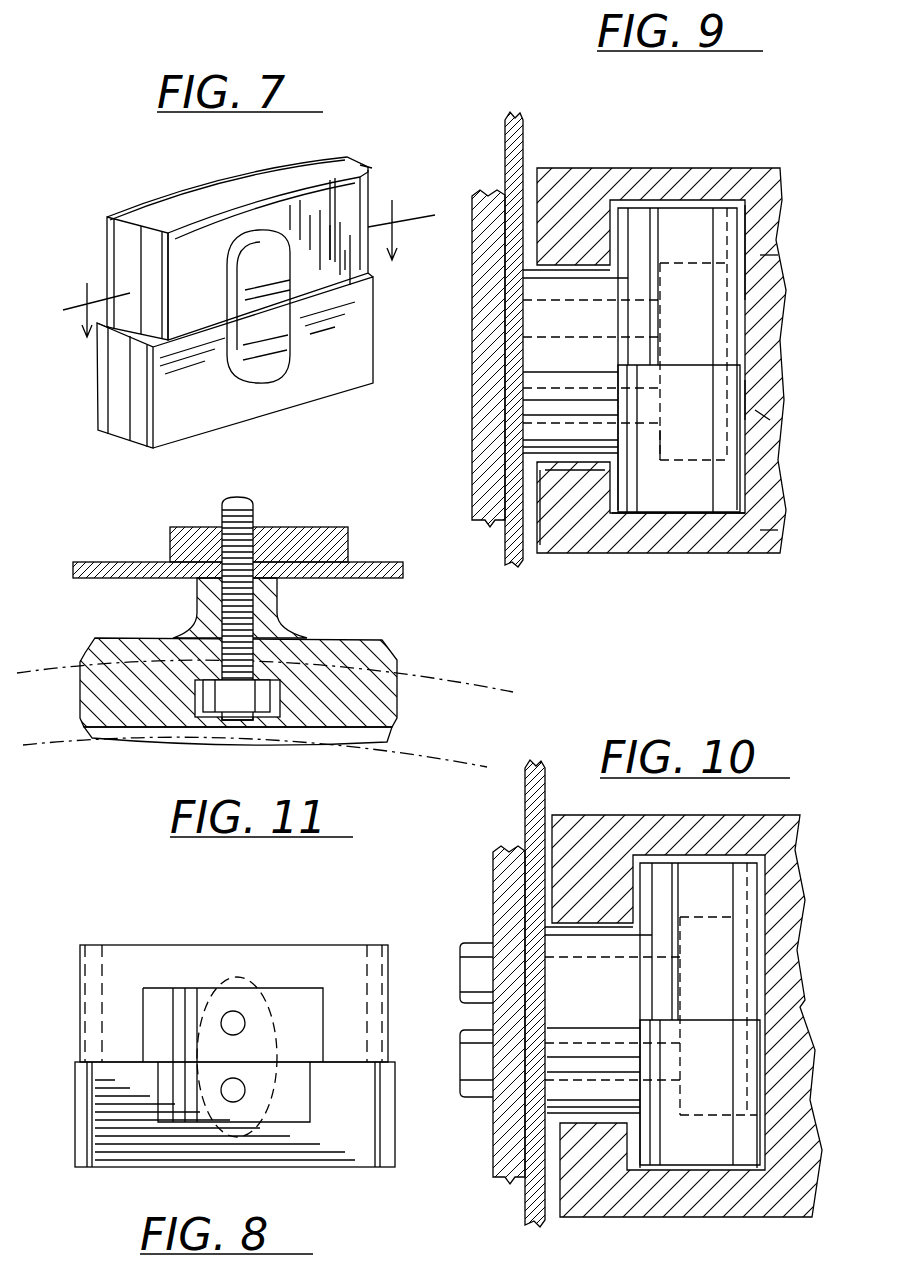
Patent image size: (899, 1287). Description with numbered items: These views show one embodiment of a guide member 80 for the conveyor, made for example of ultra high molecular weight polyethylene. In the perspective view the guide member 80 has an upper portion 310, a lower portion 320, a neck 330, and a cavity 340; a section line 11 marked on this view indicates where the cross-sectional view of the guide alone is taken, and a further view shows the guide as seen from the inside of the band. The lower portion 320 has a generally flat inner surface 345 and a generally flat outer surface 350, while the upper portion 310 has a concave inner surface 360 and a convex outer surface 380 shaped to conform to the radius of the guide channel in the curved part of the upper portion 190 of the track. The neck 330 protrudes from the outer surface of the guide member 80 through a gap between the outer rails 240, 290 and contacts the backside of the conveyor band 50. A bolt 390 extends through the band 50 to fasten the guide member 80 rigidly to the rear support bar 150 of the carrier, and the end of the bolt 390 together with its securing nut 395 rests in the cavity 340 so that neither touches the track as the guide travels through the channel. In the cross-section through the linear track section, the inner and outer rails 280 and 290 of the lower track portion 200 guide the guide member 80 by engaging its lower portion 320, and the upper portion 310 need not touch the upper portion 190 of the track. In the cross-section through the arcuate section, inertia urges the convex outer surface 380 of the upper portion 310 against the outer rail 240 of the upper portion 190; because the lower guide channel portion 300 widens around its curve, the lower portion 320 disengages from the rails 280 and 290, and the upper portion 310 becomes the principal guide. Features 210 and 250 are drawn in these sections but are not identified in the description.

In FIG. 7, the section line 11— 11 is at (246, 265).
In FIG. 9, the conveyor band 50 is at (503, 117).
In FIG. 11, the conveyor band 50 is at (112, 580).
In FIG. 7, the guide member 80 is at (377, 160).
In FIG. 11, the rear support bar 150 is at (345, 545).
In FIG. 9, the upper portion of the track 190 is at (753, 193).
In FIG. 9, the lower track portion 200 is at (758, 415).
In FIG. 9, the side wall 210 is at (767, 265).
In FIG. 9, the outer rail 240 is at (548, 248).
In FIG. 9, the channel 250 is at (692, 203).
In FIG. 11, the channel 250 is at (40, 730).
In FIG. 9, the inner rail 280 is at (770, 497).
In FIG. 9, the outer rail 290 is at (548, 488).
In FIG. 9, the lower guide channel portion 300 is at (627, 517).
In FIG. 7, the upper portion 310 is at (212, 290).
In FIG. 9, the upper portion 310 is at (640, 233).
In FIG. 11, the upper portion 310 is at (370, 703).
In FIG. 8, the upper portion 310 is at (203, 945).
In FIG. 7, the lower portion 320 is at (212, 412).
In FIG. 9, the lower portion 320 is at (720, 497).
In FIG. 11, the lower portion 320 is at (342, 747).
In FIG. 8, the lower portion 320 is at (327, 1150).
In FIG. 9, the neck 330 is at (563, 287).
In FIG. 11, the neck 330 is at (280, 610).
In FIG. 7, the cavity 340 is at (290, 343).
In FIG. 9, the cavity 340 is at (692, 442).
In FIG. 11, the cavity 340 is at (197, 713).
In FIG. 8, the cavity 340 is at (237, 1057).
In FIG. 9, the inner surface 345 is at (585, 500).
In FIG. 9, the outer surface 350 is at (740, 397).
In FIG. 7, the concave inner surface 360 is at (343, 203).
In FIG. 9, the concave inner surface 360 is at (738, 245).
In FIG. 7, the convex outer surface 380 is at (193, 187).
In FIG. 9, the bolt 390 is at (591, 376).
In FIG. 11, the bolt 390 is at (245, 626).
In FIG. 11, the securing nut 395 is at (240, 698).